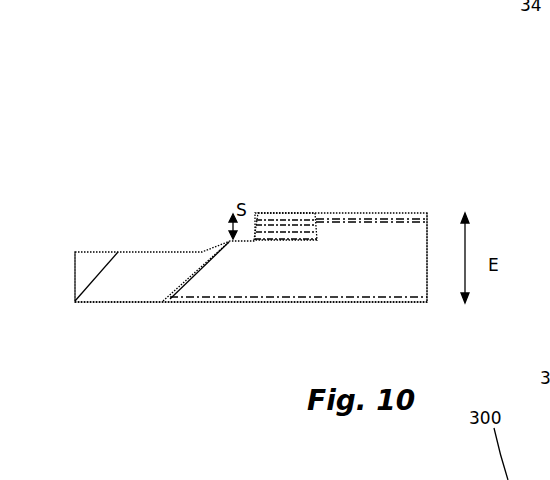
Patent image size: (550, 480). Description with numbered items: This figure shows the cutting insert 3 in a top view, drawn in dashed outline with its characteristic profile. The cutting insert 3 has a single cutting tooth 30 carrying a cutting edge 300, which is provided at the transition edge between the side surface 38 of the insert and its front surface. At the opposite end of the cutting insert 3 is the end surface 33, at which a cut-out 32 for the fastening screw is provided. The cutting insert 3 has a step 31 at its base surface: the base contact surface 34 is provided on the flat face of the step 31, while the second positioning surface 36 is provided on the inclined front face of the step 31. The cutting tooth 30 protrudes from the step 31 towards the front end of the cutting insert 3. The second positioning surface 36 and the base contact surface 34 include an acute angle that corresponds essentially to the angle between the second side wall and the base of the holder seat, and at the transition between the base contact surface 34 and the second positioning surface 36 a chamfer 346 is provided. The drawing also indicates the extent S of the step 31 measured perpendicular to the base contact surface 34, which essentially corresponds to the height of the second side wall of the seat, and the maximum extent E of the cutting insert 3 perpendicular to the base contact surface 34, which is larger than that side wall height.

The cutting insert 3 is at (176, 94).
The cutting tooth 30 is at (110, 189).
The step 31 is at (209, 218).
The cut-out 32 is at (103, 358).
The cutting edge 300 is at (74, 268).
The end surface 33 is at (428, 224).
The base contact surface 34 is at (388, 211).
The chamfer 346 is at (277, 217).
The second positioning surface 36 is at (263, 230).
The side surface 38 is at (380, 265).